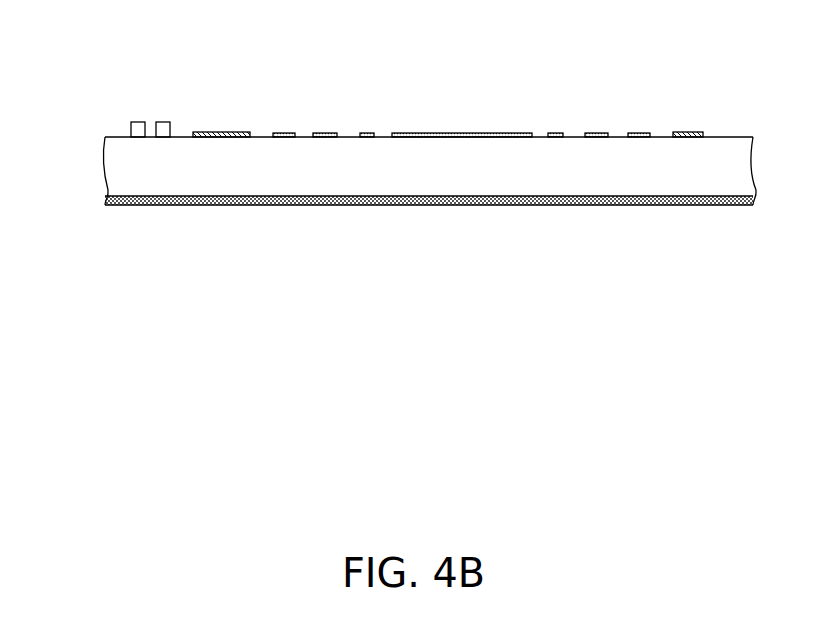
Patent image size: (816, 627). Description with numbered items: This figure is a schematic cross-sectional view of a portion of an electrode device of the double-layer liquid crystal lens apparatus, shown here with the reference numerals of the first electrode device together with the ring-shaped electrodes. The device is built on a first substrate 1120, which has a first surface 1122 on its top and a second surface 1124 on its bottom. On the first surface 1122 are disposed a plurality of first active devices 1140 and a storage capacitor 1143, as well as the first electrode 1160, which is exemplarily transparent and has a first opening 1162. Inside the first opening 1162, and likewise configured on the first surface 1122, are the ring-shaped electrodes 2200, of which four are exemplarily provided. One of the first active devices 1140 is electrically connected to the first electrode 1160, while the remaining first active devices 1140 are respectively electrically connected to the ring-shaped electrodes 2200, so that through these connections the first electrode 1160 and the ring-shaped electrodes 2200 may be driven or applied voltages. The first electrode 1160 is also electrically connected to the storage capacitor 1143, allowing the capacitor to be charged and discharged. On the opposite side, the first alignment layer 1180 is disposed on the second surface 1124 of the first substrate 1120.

The first substrate 1120 is at (384, 168).
The first surface 1122 is at (578, 135).
The second surface 1124 is at (547, 198).
The first active device 1140 is at (138, 132).
The storage capacitor 1143 is at (162, 132).
The first electrode 1160 is at (240, 132).
The first opening 1162 is at (455, 112).
The first alignment layer 1180 is at (108, 200).
The second ring-shaped electrode 2200 is at (461, 84).